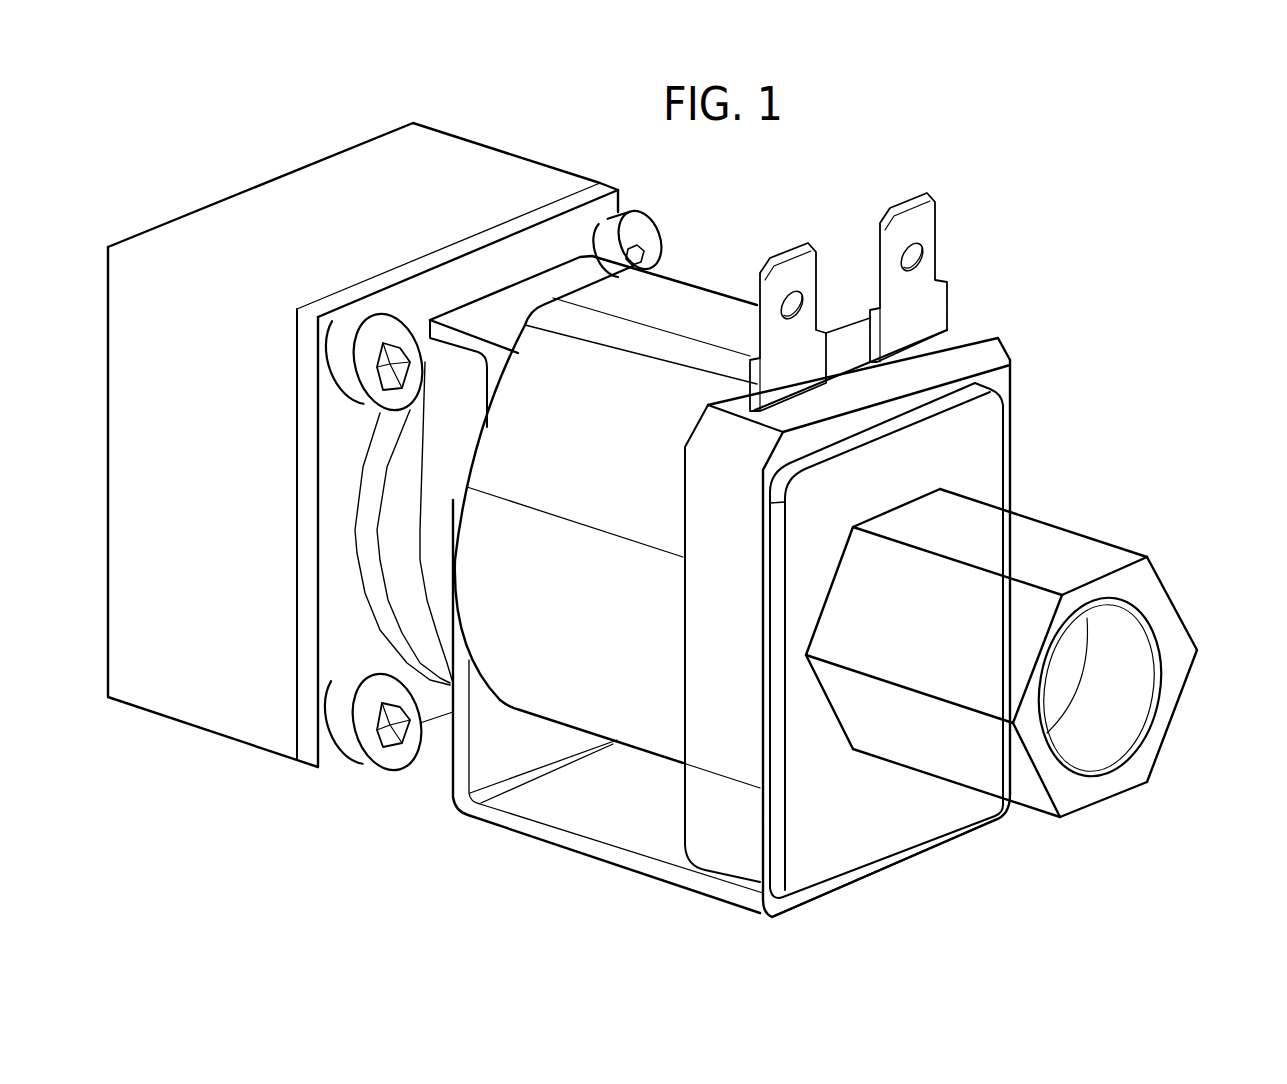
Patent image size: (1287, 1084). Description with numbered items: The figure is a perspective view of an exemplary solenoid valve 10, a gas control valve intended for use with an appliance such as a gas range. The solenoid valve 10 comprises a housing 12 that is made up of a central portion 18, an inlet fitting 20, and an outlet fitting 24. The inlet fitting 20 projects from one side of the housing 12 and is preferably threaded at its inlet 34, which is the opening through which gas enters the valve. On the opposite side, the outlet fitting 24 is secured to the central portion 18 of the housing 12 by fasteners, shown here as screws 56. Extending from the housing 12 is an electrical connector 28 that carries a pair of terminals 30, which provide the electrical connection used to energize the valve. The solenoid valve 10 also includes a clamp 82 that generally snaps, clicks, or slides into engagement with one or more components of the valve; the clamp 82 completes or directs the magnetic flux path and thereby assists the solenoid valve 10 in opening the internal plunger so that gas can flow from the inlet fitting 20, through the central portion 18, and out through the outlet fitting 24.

The solenoid valve 10 is at (1097, 200).
The housing 12 is at (718, 275).
The central portion 18 is at (585, 685).
The inlet fitting 20 is at (1028, 640).
The outlet fitting 24 is at (507, 173).
The electrical connector 28 is at (852, 216).
The terminals 30 is at (928, 231).
The inlet 34 is at (1104, 689).
The screws 56 is at (660, 231).
The clamp 82 is at (907, 838).